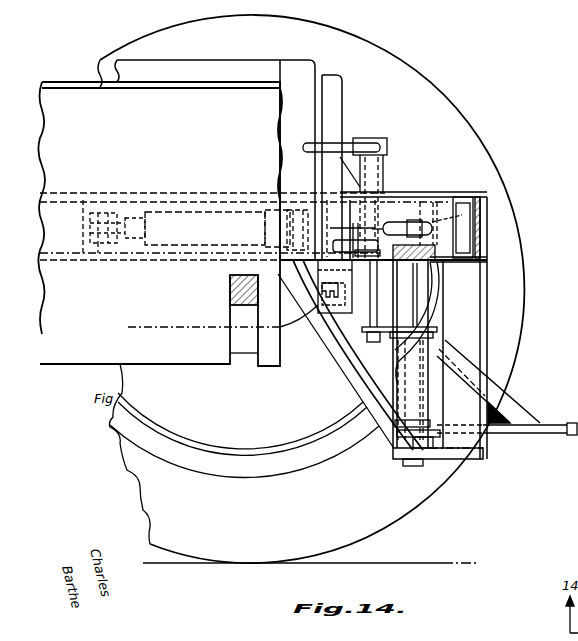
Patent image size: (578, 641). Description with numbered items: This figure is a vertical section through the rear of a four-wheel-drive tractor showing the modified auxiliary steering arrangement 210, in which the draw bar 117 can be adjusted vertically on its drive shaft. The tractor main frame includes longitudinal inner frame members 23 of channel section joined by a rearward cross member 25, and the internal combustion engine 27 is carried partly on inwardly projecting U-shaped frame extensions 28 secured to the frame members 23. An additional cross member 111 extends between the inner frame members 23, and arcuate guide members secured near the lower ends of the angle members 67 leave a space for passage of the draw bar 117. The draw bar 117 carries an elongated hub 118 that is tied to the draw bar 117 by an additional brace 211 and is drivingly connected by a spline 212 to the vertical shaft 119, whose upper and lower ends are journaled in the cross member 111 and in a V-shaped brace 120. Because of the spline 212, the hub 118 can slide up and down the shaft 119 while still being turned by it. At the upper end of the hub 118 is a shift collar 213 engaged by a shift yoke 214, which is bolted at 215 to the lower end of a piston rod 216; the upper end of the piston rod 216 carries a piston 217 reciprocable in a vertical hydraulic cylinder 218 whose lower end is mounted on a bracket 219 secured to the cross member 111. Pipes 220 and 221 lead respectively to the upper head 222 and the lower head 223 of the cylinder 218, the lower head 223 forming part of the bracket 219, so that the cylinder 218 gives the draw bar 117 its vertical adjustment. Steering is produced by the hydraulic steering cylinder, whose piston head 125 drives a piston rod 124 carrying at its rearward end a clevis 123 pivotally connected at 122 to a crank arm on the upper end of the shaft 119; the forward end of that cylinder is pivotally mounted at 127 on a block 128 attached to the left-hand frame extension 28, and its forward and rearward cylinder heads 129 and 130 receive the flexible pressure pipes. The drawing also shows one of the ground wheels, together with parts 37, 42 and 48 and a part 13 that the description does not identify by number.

The connecting rod end 13 is at (564, 423).
The longitudinal inner frame members 23 is at (108, 193).
The rearward cross member 25 is at (488, 205).
The internal combustion engine 27 is at (287, 58).
The frame extensions 28 is at (83, 228).
The frame block 37 is at (181, 364).
The drum 42 is at (378, 522).
The bearing block 48 is at (230, 295).
The angle members 67 is at (475, 326).
The cross member 111 is at (435, 252).
The draw bar 117 is at (532, 433).
The hub 118 is at (375, 395).
The vertical shaft 119 is at (420, 275).
The V-shaped brace 120 is at (433, 462).
The pivotal connection 122 is at (467, 227).
The clevis 123 is at (433, 202).
The piston rod 124 is at (385, 225).
The piston head 125 is at (195, 212).
The pivotal mounting 127 is at (118, 213).
The block 128 is at (98, 244).
The forward cylinder head 129 is at (140, 240).
The rearward cylinder head 130 is at (272, 210).
The modified auxiliary steering arrangement 210 is at (493, 230).
The additional brace 211 is at (517, 406).
The spline 212 is at (420, 306).
The shift collar 213 is at (437, 337).
The shift yoke 214 is at (397, 383).
The bolt connection 215 is at (393, 350).
The piston rod 216 is at (325, 312).
The piston 217 is at (405, 200).
The vertical hydraulic cylinder 218 is at (387, 160).
The bracket 219 is at (385, 301).
The pipe 220 is at (350, 143).
The pipe 221 is at (292, 210).
The upper head 222 is at (392, 138).
The lower head 223 is at (330, 215).